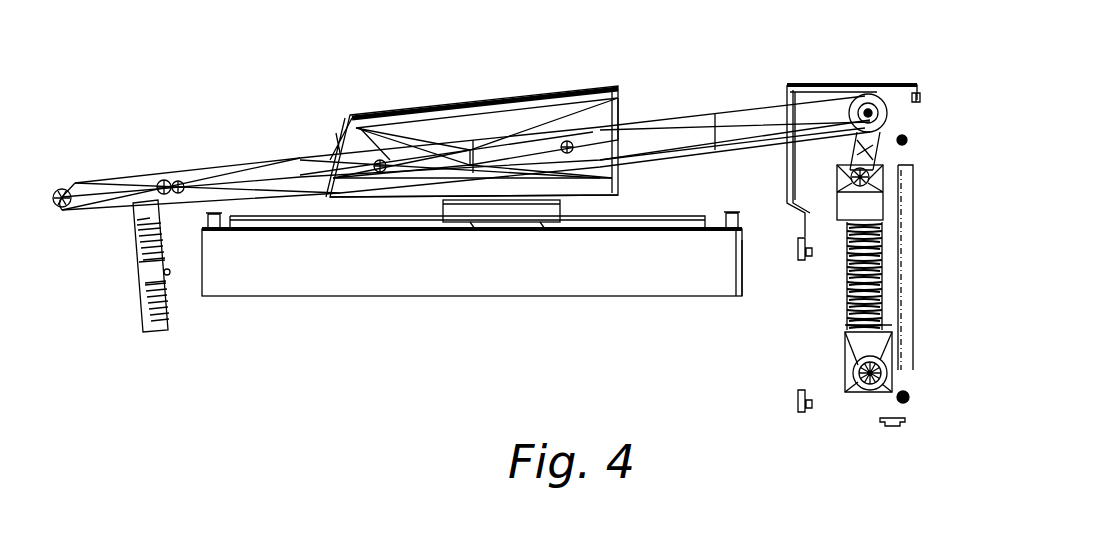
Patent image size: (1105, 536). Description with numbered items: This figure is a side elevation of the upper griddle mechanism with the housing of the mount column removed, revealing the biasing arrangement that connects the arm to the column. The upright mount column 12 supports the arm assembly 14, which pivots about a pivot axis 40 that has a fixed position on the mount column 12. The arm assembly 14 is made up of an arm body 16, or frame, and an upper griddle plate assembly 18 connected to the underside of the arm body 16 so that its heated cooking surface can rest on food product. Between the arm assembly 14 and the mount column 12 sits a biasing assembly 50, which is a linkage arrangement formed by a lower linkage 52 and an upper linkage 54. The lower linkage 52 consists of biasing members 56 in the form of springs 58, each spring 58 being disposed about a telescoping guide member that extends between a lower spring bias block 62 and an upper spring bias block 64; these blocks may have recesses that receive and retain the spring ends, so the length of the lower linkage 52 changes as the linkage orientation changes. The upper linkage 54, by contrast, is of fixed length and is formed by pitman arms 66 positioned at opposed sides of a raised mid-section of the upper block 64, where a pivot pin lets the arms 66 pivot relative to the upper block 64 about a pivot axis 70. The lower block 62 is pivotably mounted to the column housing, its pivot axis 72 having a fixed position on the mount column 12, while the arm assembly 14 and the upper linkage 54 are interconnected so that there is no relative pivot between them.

The mount column 12 is at (900, 82).
The arm assembly 14 is at (678, 118).
The arm body 16 is at (272, 165).
The upper griddle plate assembly 18 is at (413, 267).
The pivot axis 40 is at (868, 108).
The biasing assembly 50 is at (813, 318).
The lower linkage 52 is at (843, 324).
The upper linkage 54 is at (888, 152).
The biasing member 56 is at (907, 302).
The spring 58 is at (882, 272).
The lower spring bias block 62 is at (878, 345).
The upper spring bias block 64 is at (873, 207).
The pitman arm 66 is at (867, 152).
The pivot axis 70 is at (870, 177).
The pivot axis 72 is at (882, 372).